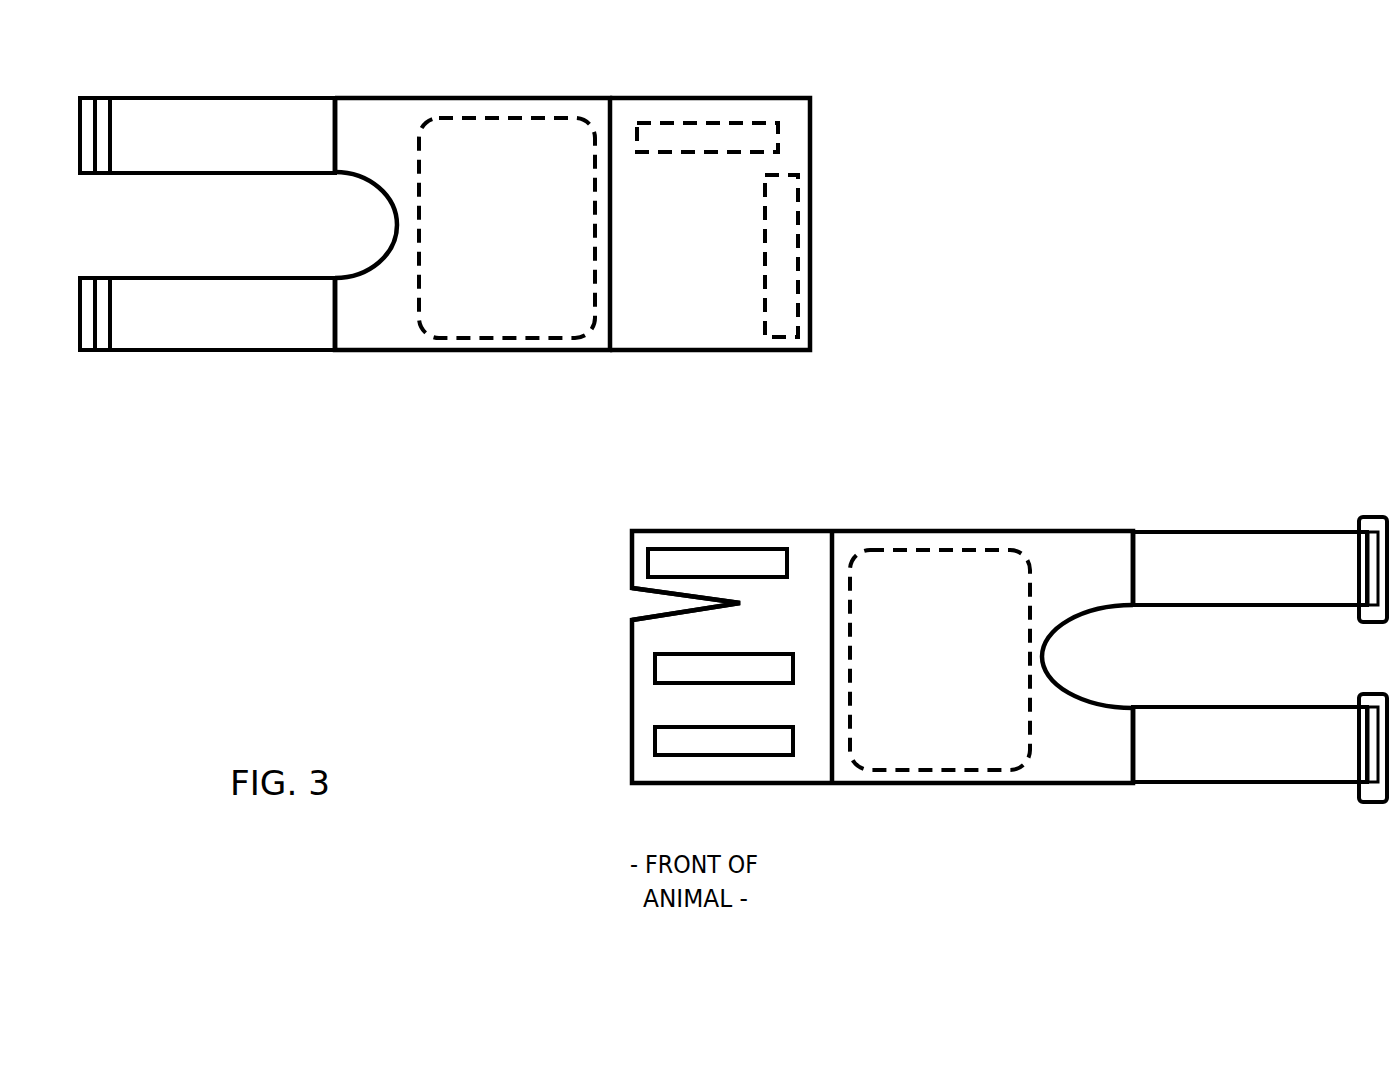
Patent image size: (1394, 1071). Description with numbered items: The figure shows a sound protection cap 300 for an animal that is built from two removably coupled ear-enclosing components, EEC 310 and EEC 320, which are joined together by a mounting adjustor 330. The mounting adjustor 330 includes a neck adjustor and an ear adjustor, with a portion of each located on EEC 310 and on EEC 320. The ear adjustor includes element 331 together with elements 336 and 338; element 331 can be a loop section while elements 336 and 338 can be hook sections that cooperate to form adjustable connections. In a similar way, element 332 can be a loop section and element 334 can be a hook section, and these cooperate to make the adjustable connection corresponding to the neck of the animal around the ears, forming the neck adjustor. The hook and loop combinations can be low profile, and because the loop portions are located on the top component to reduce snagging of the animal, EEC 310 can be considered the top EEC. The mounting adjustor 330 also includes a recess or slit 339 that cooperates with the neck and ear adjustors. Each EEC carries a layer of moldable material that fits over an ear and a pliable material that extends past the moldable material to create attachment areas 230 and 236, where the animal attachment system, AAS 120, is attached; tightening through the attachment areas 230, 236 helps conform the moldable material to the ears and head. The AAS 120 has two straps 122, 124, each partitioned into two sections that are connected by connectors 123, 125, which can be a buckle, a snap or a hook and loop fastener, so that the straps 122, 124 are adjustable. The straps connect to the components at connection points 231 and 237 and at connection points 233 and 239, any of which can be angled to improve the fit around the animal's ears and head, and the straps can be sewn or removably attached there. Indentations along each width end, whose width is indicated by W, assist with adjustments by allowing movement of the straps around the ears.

The sound protection cap 300 is at (1262, 114).
The EEC 310 is at (910, 212).
The EEC 320 is at (1012, 452).
The mounting adjustor 330 is at (708, 368).
The element 331 is at (787, 297).
The element 332 is at (758, 137).
The element 334 is at (668, 552).
The element 336 is at (672, 674).
The element 338 is at (670, 748).
The recess or slit 339 is at (641, 608).
The attachment area 230 is at (365, 372).
The connection point 231 is at (303, 343).
The connection point 233 is at (305, 112).
The attachment area 236 is at (1098, 802).
The connection point 237 is at (1160, 773).
The connection point 239 is at (1163, 542).
The width W is at (393, 400).
The AAS 120 is at (219, 380).
The strap 122 is at (723, 537).
The connector 123 is at (734, 541).
The strap 124 is at (723, 310).
The connector 125 is at (735, 318).